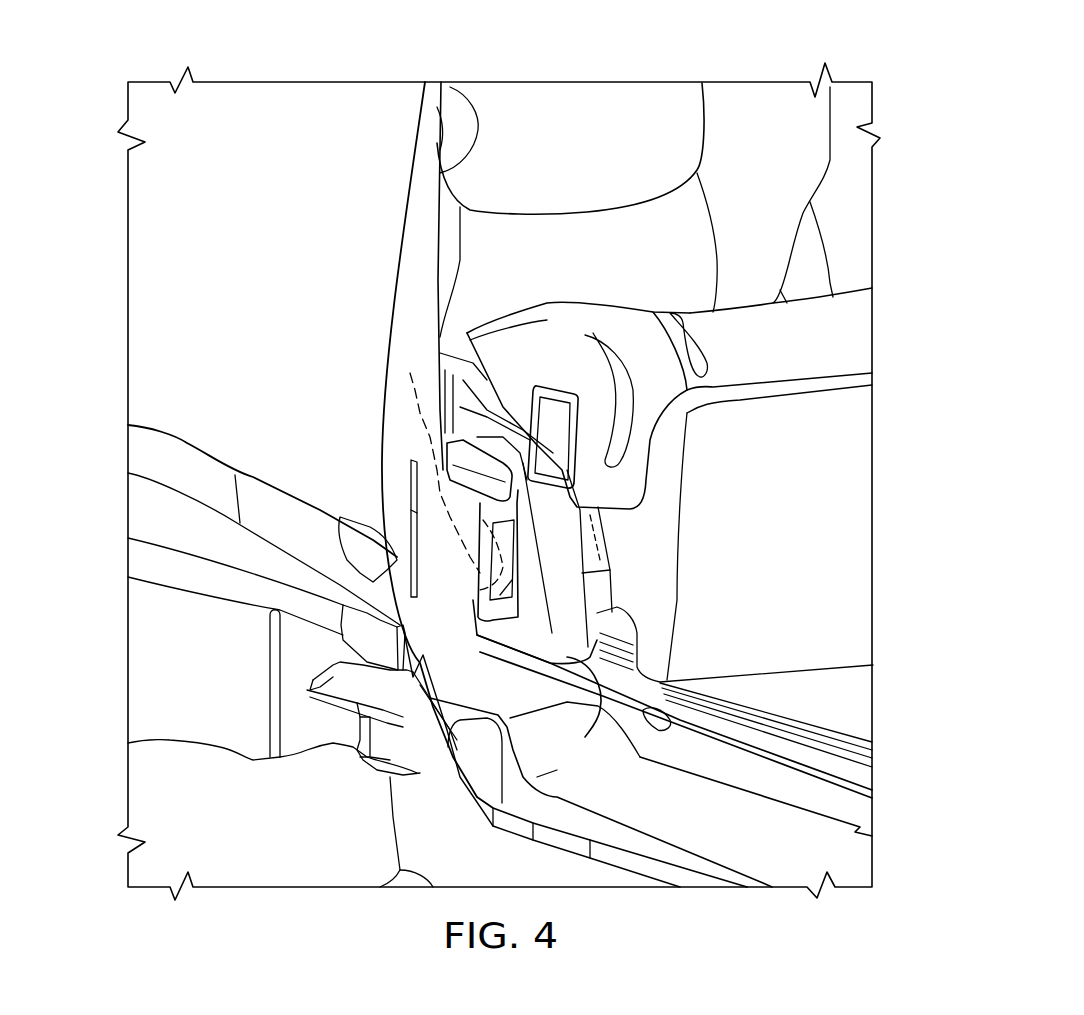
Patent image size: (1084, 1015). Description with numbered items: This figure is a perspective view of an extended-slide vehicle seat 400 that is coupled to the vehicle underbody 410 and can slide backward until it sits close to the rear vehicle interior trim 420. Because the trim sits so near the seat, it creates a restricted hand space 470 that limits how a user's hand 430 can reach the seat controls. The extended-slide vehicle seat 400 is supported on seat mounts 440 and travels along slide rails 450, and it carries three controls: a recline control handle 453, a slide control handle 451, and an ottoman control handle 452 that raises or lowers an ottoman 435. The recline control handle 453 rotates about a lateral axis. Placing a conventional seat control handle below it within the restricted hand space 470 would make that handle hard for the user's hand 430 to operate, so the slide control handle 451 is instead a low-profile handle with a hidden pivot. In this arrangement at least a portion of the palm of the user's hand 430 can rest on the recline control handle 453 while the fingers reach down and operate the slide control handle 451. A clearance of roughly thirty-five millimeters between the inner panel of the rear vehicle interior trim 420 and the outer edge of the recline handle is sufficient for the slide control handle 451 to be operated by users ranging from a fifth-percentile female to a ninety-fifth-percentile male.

The extended-slide vehicle seat 400 is at (647, 71).
The vehicle underbody 410 is at (138, 513).
The rear vehicle interior trim 420 is at (152, 362).
The user's hand 430 is at (410, 378).
The ottoman 435 is at (867, 477).
The seat mounts 440 is at (580, 720).
The slide rails 450 is at (787, 748).
The slide control handle 451 is at (480, 567).
The ottoman control handle 452 is at (553, 413).
The recline control handle 453 is at (483, 463).
The restricted hand space 470 is at (410, 512).